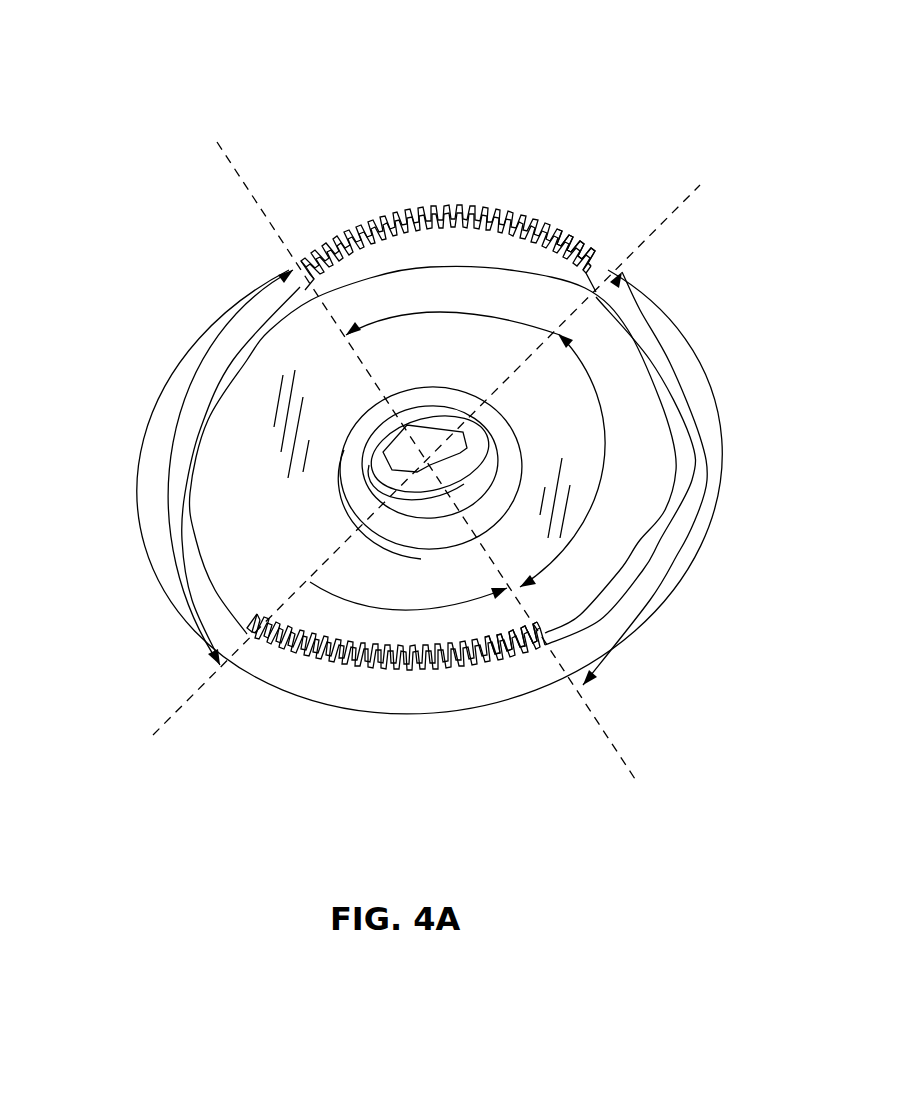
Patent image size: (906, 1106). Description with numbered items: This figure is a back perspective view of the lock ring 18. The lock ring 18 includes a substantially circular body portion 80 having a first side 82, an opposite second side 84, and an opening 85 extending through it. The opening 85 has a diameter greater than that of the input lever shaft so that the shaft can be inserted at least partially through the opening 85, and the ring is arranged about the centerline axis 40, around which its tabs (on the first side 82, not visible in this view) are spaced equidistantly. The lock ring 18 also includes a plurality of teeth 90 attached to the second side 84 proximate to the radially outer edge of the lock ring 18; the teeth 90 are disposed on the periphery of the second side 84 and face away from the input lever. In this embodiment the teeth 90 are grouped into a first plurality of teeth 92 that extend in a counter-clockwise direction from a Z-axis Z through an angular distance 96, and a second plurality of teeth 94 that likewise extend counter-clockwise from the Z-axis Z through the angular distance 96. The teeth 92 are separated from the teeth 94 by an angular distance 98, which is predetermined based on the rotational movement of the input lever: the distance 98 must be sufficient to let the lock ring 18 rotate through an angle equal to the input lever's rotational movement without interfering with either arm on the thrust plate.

The lock ring 18 is at (115, 68).
The centerline axis 40 is at (428, 458).
The substantially circular body portion 80 is at (213, 535).
The first side 82 is at (322, 707).
The second side 84 is at (647, 437).
The opening 85 is at (473, 453).
The teeth 90 is at (556, 237).
The first plurality of teeth 92 is at (378, 660).
The second plurality of teeth 94 is at (406, 216).
The angular distance 96 is at (443, 313).
The angular distance 98 is at (695, 347).
The Z-axis Z is at (683, 207).